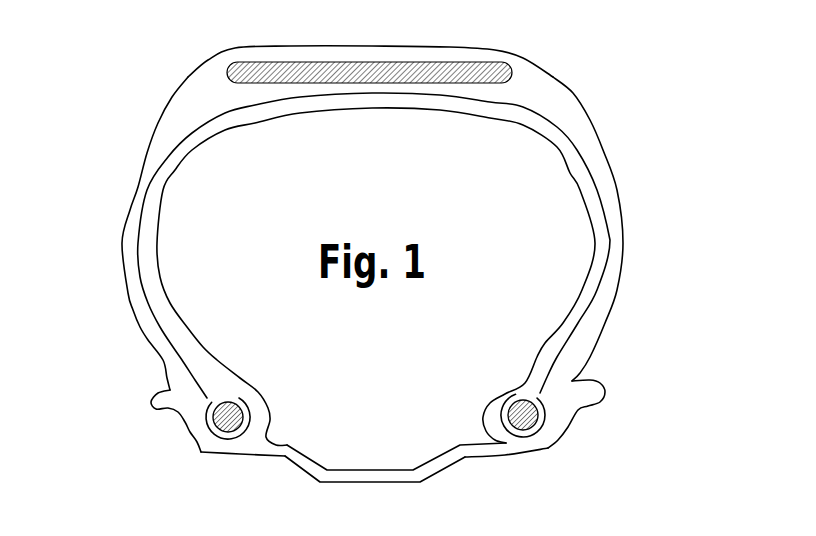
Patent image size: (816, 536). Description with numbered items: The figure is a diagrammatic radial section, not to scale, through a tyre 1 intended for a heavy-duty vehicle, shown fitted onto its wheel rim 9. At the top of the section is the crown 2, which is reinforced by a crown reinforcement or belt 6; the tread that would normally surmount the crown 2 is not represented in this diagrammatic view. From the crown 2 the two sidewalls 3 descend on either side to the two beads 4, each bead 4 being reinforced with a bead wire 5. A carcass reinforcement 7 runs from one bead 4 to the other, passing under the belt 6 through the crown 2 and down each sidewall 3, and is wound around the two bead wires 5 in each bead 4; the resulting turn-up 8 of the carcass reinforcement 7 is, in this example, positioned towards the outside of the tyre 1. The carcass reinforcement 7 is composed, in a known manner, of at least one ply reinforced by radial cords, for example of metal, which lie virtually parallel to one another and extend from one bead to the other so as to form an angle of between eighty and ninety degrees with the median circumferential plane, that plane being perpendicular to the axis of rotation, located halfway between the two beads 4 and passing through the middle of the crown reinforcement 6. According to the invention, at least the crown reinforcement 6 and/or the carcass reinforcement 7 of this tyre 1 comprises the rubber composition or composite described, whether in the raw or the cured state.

The tyre 1 is at (636, 185).
The crown 2 is at (450, 53).
The sidewall 3 is at (126, 237).
The bead 4 is at (250, 437).
The bead wire 5 is at (247, 414).
The crown reinforcement or belt 6 is at (366, 62).
The carcass reinforcement 7 is at (150, 160).
The turn-up 8 is at (204, 398).
The wheel rim 9 is at (190, 427).